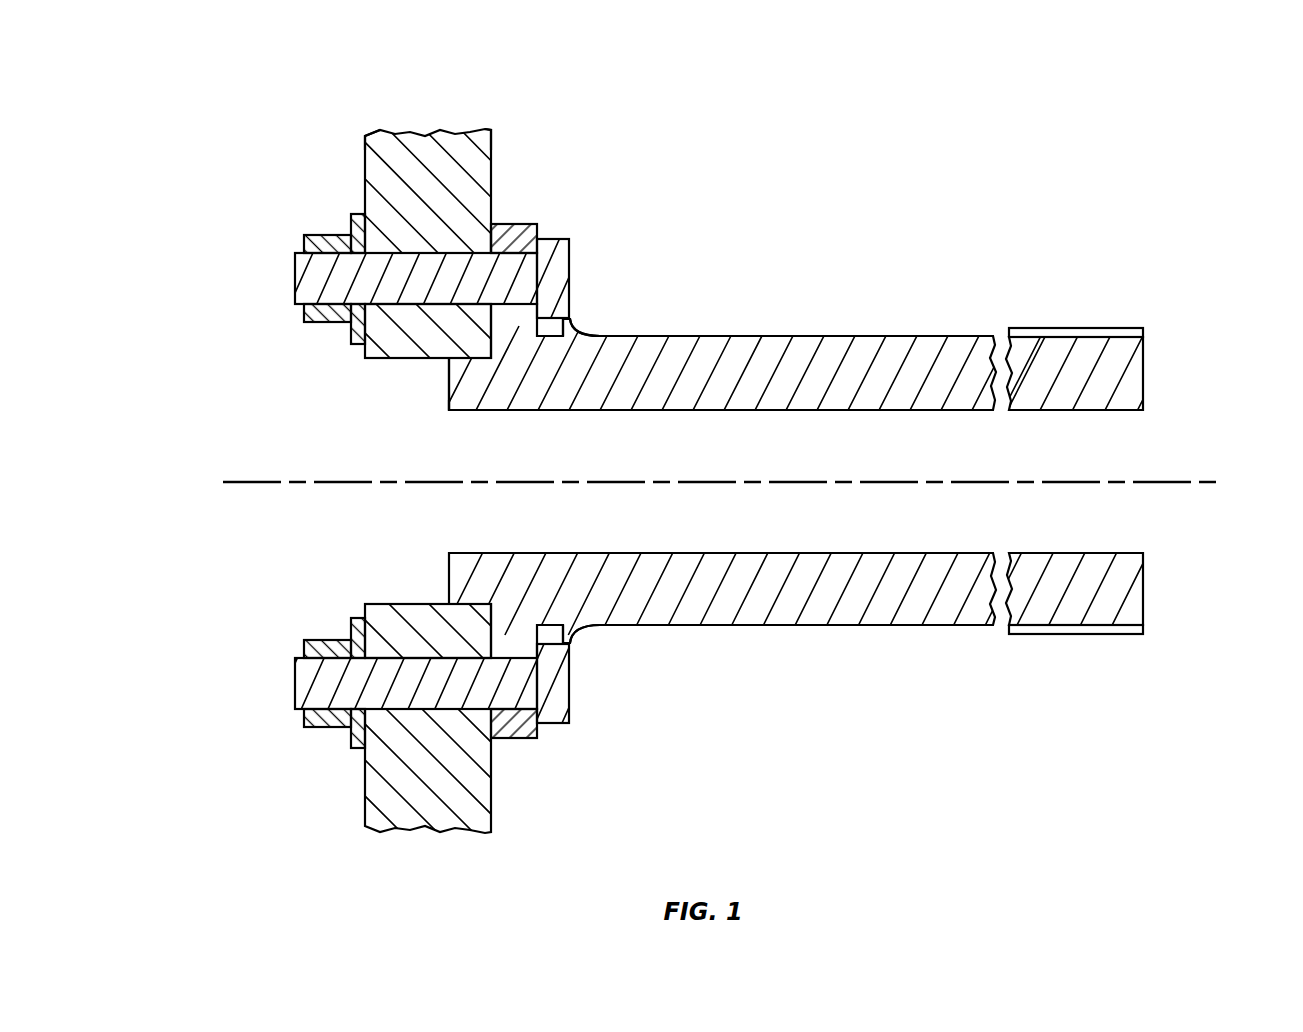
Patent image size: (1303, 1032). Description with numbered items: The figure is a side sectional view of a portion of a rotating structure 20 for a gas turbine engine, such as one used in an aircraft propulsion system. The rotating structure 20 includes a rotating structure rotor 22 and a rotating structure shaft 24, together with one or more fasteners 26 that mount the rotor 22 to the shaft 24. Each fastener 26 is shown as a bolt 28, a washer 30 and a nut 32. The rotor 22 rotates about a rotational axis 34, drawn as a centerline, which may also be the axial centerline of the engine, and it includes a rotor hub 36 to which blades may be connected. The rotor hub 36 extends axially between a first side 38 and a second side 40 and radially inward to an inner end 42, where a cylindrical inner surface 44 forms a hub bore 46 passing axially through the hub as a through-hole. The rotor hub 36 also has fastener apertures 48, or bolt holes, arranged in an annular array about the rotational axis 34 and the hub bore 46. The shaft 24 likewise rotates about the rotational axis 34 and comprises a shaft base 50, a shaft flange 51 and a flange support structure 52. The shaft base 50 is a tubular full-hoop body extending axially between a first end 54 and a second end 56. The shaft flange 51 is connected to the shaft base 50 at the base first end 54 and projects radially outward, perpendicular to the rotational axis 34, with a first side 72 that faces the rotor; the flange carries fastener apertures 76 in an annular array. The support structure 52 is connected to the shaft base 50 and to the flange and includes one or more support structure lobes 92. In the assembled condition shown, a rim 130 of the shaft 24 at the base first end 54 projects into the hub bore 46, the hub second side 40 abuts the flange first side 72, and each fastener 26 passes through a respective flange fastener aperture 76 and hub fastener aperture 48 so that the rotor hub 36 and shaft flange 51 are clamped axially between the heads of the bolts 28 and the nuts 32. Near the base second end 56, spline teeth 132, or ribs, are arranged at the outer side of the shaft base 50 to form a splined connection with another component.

The rotating structure 20 is at (702, 433).
The rotating structure rotor 22 is at (433, 433).
The rotating structure shaft 24 is at (795, 471).
The fastener 26 is at (392, 481).
The bolt 28 is at (562, 237).
The washer 30 is at (354, 216).
The nut 32 is at (315, 222).
The rotational axis 34 is at (1215, 487).
The rotor hub 36 is at (495, 152).
The first side of the rotor hub 38 is at (363, 137).
The second side of the rotor hub 40 is at (493, 130).
The inner end of the rotor hub 42 is at (396, 480).
The inner surface 44 is at (375, 362).
The hub bore 46 is at (726, 634).
The hub fastener aperture 48 is at (410, 250).
The shaft base 50 is at (905, 632).
The shaft flange 51 is at (531, 748).
The flange support structure 52 is at (575, 637).
The first end of the shaft base 54 is at (449, 412).
The second end of the shaft base 56 is at (1148, 380).
The first side of the shaft flange 72 is at (483, 244).
The flange fastener aperture 76 is at (538, 498).
The support structure lobe 92 is at (565, 322).
The rim 130 is at (447, 388).
The spline teeth 132 is at (1112, 329).